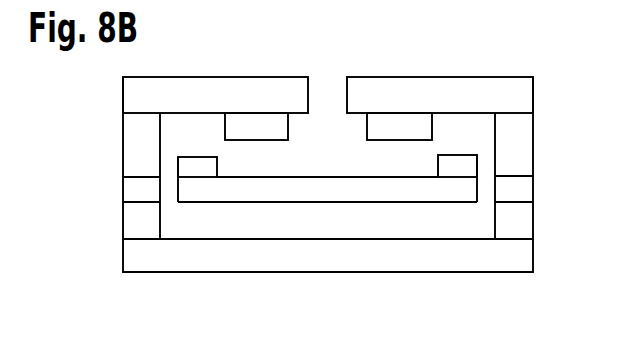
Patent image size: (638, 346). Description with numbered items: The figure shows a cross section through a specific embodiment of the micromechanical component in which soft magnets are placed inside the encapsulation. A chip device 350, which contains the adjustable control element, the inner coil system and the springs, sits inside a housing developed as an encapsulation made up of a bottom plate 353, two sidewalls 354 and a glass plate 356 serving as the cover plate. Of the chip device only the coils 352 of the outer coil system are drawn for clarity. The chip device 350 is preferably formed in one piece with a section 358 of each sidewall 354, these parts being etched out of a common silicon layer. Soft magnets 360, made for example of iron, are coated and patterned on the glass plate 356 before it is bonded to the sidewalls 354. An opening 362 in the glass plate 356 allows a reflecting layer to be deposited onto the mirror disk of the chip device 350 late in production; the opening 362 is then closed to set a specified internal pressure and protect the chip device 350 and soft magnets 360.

The chip device 350 is at (287, 190).
The coils 352 is at (455, 165).
The bottom plate 353 is at (457, 255).
The sidewalls 354 is at (120, 113).
The glass plate 356 is at (392, 92).
The section of sidewalls 358 is at (502, 188).
The soft magnets 360 is at (252, 128).
The opening 362 is at (327, 90).